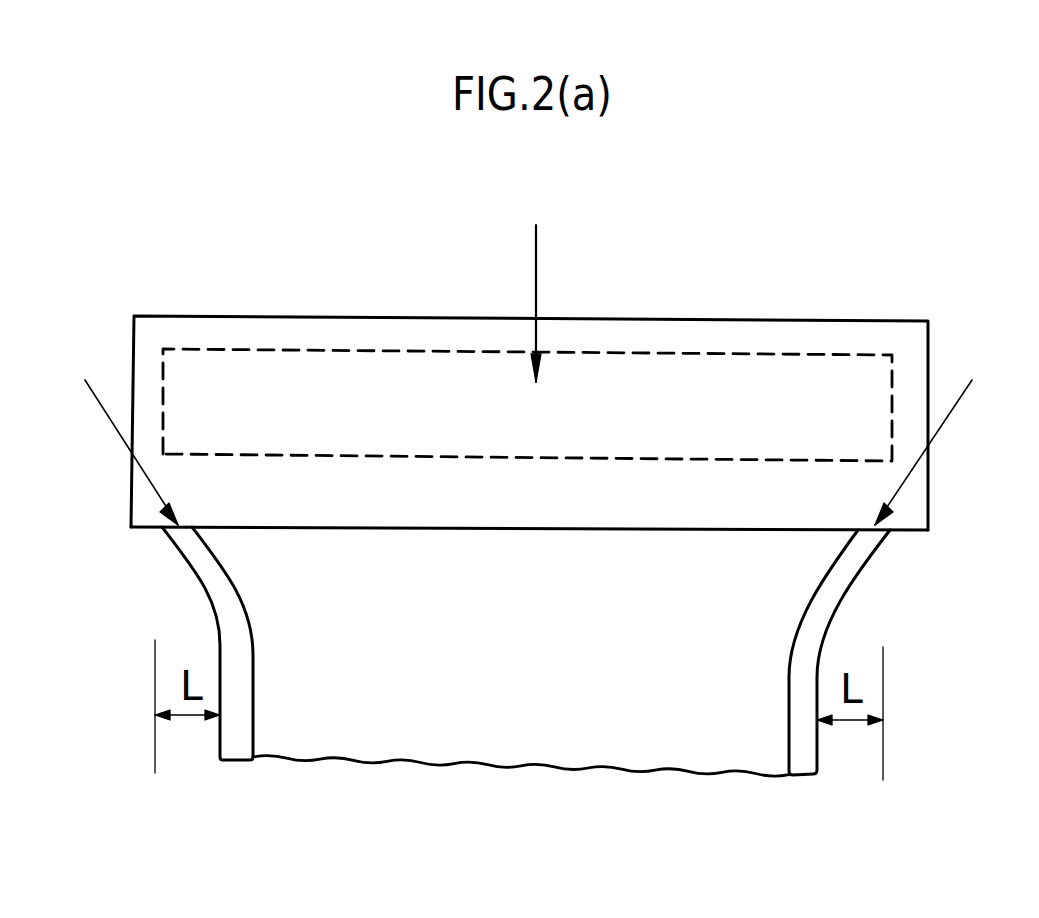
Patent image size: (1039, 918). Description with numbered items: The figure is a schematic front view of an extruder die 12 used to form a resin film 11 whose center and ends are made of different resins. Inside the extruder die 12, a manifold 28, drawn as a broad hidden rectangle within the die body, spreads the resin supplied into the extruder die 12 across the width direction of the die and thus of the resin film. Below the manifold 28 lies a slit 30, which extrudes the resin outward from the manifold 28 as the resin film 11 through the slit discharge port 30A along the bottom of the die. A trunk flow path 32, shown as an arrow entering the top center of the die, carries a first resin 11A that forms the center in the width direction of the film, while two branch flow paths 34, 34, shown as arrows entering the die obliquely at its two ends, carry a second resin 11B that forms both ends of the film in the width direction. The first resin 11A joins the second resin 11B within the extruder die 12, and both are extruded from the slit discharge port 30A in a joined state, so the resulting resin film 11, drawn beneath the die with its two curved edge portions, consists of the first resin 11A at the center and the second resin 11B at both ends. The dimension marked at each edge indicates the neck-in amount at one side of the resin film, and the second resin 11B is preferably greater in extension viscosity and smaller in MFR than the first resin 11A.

The resin film 11 is at (568, 737).
The first resin 11A is at (688, 757).
The second resin 11B is at (190, 580).
The extruder die 12 is at (792, 283).
The manifold 28 is at (810, 370).
The slit 30 is at (328, 467).
The slit discharge port 30A is at (675, 532).
The trunk flow path 32 is at (536, 288).
The branch flow path 34 is at (102, 408).